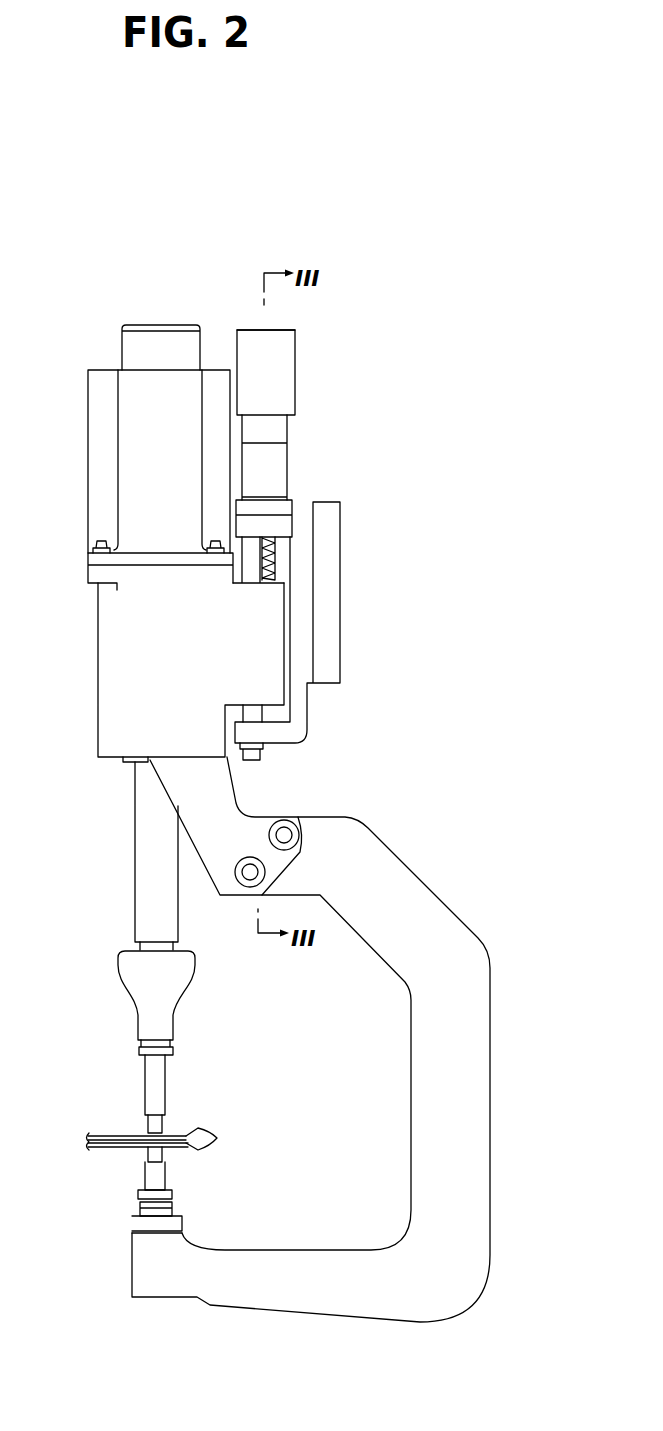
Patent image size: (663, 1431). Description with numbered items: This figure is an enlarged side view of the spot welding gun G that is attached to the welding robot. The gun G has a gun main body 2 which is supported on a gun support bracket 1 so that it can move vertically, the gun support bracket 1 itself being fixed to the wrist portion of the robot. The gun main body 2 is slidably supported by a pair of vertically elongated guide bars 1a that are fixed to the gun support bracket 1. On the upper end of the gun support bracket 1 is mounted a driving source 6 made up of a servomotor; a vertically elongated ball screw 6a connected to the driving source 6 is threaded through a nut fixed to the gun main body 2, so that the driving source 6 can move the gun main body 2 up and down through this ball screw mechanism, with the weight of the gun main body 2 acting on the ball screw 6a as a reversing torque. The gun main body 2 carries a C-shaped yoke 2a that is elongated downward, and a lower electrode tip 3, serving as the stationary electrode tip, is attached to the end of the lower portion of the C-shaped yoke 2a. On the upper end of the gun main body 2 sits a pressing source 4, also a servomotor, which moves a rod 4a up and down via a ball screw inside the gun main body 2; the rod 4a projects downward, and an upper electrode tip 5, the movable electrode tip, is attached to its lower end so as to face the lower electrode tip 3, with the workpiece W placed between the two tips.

The gun support bracket 1 is at (332, 665).
The guide bars 1a is at (252, 545).
The gun main body 2 is at (110, 692).
The C-shaped yoke 2a is at (490, 1105).
The lower electrode tip 3 is at (150, 1157).
The pressing source 4 is at (100, 481).
The rod 4a is at (150, 841).
The upper electrode tip 5 is at (150, 1125).
The driving source 6 is at (283, 393).
The ball screw 6a is at (273, 557).
The spot welding gun G is at (306, 355).
The workpiece W is at (171, 1138).